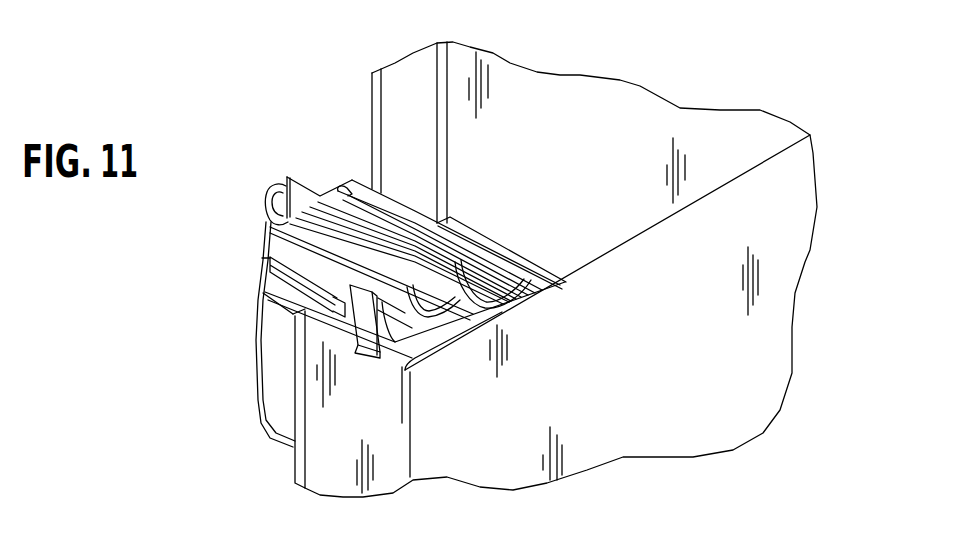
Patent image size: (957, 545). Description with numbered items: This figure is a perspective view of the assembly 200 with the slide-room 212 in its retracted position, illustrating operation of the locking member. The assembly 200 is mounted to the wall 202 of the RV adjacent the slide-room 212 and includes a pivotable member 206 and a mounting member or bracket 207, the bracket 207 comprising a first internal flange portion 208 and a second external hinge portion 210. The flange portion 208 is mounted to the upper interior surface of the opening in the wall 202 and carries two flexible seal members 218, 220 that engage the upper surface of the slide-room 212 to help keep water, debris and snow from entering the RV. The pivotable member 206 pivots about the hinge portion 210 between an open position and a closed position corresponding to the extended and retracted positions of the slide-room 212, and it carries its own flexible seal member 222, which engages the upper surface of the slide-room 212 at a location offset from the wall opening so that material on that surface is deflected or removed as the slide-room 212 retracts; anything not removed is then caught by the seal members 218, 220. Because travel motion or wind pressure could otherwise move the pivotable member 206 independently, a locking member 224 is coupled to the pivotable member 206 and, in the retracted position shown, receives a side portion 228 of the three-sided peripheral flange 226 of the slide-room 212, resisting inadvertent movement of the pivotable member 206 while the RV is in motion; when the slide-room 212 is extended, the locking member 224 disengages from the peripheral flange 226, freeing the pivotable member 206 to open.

The assembly 200 is at (250, 125).
The wall 202 is at (593, 97).
The pivotable member 206 is at (258, 318).
The mounting member or bracket 207 is at (320, 197).
The flange portion 208 is at (360, 183).
The hinge portion 210 is at (287, 185).
The slide-room 212 is at (660, 360).
The seal member 218 is at (535, 278).
The seal member 220 is at (498, 297).
The seal member 222 is at (433, 345).
The locking member 224 is at (367, 360).
The peripheral flange 226 is at (297, 465).
The side portion 228 is at (317, 377).